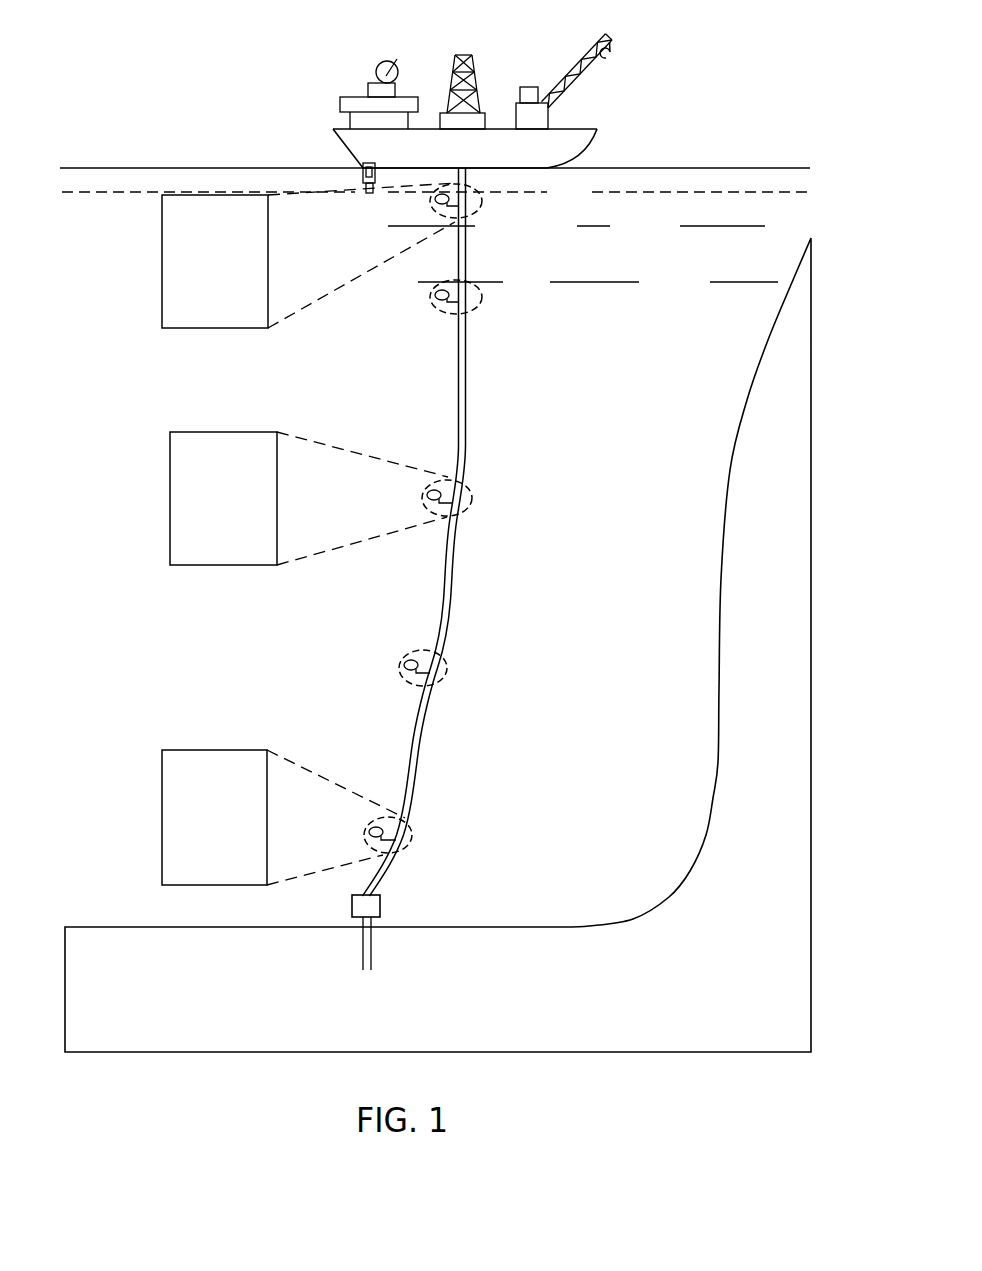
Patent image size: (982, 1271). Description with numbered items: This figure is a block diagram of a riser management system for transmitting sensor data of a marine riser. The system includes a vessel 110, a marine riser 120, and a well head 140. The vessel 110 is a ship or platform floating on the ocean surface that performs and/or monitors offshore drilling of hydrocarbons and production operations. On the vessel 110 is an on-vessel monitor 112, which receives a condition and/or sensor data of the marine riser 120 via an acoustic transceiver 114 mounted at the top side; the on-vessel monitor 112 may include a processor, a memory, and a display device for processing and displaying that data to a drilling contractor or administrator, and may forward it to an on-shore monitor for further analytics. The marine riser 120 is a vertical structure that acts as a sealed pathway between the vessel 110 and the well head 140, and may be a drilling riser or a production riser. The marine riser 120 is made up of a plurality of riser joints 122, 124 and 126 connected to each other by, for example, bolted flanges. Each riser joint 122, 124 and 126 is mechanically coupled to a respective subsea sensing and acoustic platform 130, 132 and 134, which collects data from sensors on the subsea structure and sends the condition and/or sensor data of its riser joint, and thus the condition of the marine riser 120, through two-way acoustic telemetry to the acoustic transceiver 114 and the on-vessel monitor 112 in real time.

The vessel 110 is at (463, 54).
The on-vessel monitor 112 is at (350, 97).
The acoustic transceiver 114 is at (360, 183).
The marine riser 120 is at (467, 177).
The riser joint 122 is at (485, 207).
The riser joint 124 is at (412, 833).
The riser joint 126 is at (473, 493).
The subsea sensing and acoustic platform 130 is at (162, 232).
The subsea sensing and acoustic platform 132 is at (170, 470).
The subsea sensing and acoustic platform 134 is at (162, 782).
The well head 140 is at (380, 905).